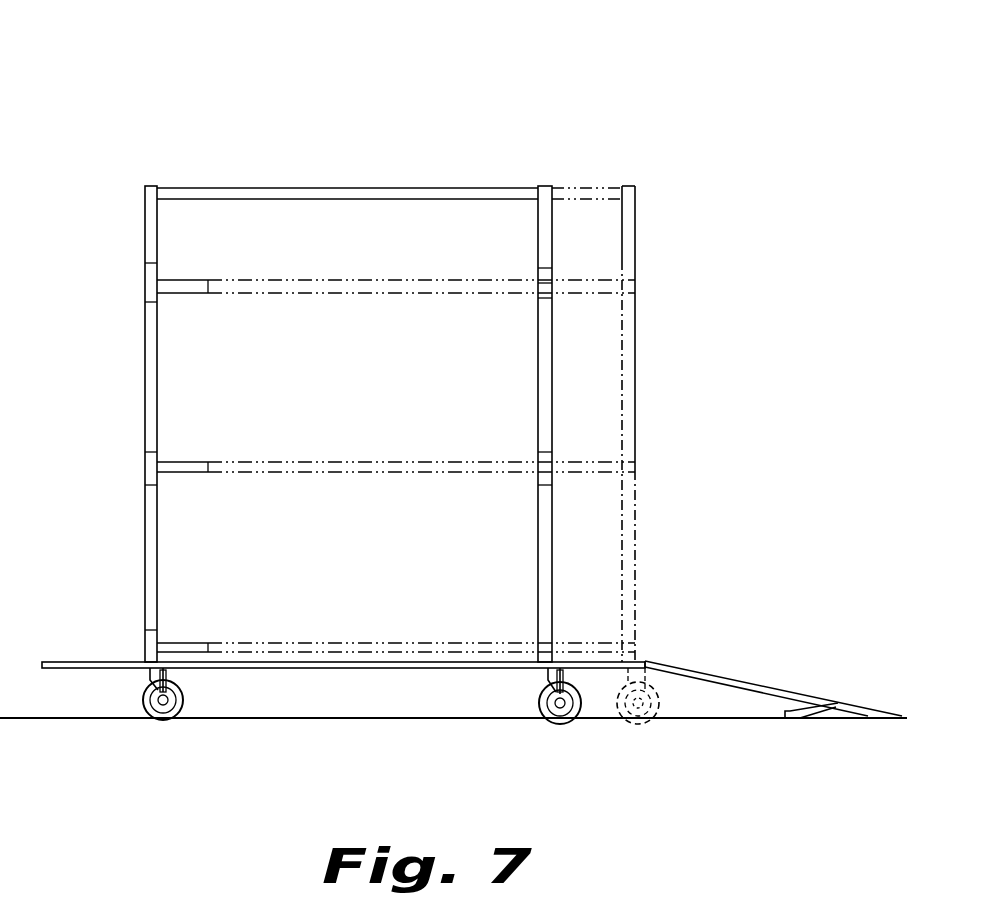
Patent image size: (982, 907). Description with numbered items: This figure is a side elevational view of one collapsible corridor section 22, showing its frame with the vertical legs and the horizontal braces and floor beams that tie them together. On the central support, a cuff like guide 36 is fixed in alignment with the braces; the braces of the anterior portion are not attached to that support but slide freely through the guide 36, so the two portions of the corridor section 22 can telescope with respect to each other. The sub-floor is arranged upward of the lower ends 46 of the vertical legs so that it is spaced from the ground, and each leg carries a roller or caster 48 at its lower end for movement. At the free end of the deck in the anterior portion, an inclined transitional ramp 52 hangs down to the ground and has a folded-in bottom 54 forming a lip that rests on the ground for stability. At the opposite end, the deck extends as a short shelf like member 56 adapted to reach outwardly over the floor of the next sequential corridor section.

The corridor section 22 is at (298, 116).
The cuff like guide 36 is at (530, 273).
The lower ends of the vertical legs 46 is at (540, 681).
The roller or caster 48 is at (143, 703).
The inclined transitional ramp 52 is at (733, 686).
The folded-in bottom 54 is at (800, 717).
The shelf like member 56 is at (73, 661).